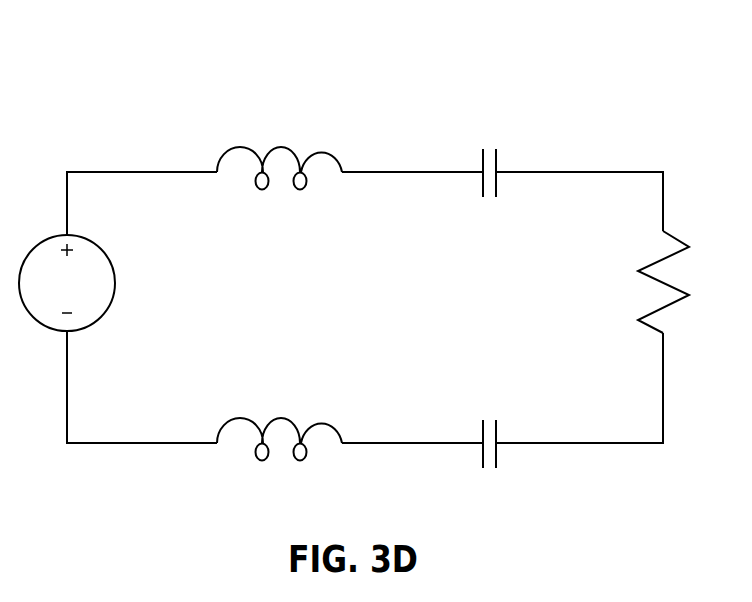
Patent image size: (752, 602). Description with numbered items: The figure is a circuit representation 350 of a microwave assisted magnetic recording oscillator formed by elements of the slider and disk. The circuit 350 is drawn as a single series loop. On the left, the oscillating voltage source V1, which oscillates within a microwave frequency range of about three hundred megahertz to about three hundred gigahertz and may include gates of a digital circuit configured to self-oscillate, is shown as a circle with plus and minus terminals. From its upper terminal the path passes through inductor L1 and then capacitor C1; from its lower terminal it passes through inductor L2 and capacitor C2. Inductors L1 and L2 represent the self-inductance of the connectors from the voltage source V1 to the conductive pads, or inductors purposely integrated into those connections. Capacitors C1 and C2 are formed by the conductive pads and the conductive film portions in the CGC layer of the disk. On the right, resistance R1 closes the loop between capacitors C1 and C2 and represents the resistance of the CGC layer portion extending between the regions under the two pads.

The circuit representation 350 is at (72, 64).
The oscillating voltage source V1 is at (67, 267).
The inductor L1 is at (279, 152).
The capacitor C1 is at (490, 155).
The resistance R1 is at (683, 282).
The inductor L2 is at (279, 426).
The capacitor C2 is at (490, 429).